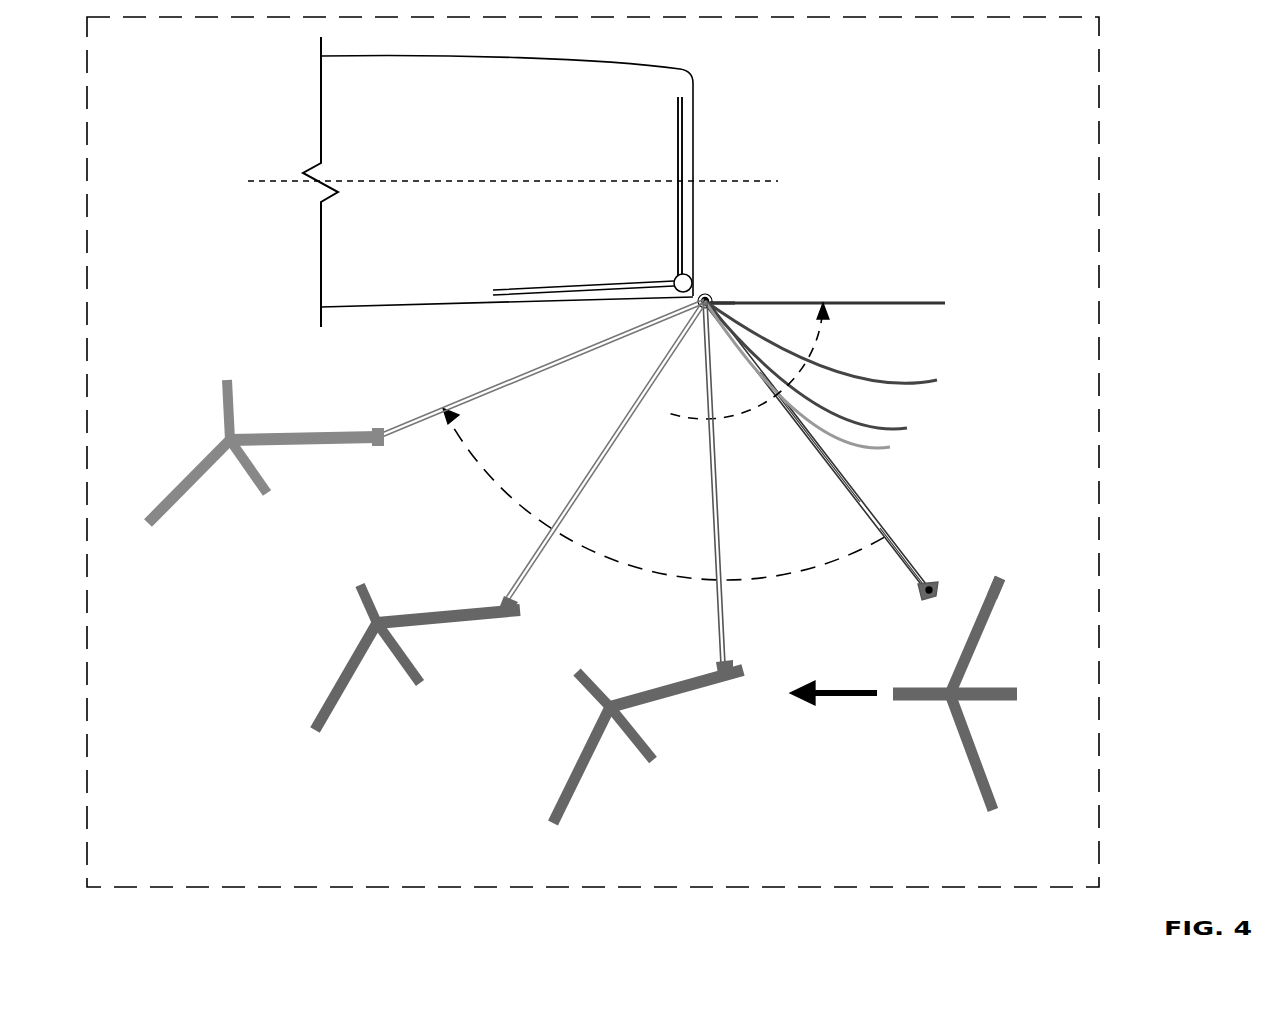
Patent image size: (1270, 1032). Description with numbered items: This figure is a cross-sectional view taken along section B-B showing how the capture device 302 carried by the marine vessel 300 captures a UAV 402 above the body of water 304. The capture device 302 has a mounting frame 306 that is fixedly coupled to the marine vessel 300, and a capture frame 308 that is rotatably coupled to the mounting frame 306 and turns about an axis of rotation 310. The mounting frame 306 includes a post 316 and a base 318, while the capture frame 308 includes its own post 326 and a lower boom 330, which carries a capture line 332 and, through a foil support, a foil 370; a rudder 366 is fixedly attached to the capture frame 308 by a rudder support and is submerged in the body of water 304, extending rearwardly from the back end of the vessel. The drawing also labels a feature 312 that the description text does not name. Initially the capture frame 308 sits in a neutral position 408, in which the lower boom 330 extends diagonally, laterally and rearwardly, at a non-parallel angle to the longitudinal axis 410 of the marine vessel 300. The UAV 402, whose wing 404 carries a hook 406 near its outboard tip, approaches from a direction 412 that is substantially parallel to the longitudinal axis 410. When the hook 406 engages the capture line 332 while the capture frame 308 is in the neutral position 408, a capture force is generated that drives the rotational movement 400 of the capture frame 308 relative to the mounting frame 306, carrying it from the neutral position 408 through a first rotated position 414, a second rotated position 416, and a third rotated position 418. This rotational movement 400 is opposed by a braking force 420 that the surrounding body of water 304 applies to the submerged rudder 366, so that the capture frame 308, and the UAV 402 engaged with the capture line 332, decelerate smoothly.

The marine vessel 300 is at (456, 119).
The capture device 302 is at (842, 422).
The body of water 304 is at (863, 141).
The mounting frame 306 is at (677, 212).
The capture frame 308 is at (870, 500).
The axis of rotation 310 is at (707, 290).
The fuselage lower surface 312 is at (380, 297).
The post 316 is at (677, 276).
The base 318 is at (677, 135).
The post 326 is at (712, 298).
The lower boom 330 is at (907, 550).
The capture line 332 is at (930, 605).
The rudder 366 is at (887, 306).
The foil 370 is at (913, 600).
The rotational movement 400 is at (623, 563).
The UAV 402 is at (973, 667).
The wing 404 is at (983, 637).
The hook 406 is at (993, 583).
The neutral position 408 is at (843, 490).
The longitudinal axis 410 is at (727, 180).
The direction 412 is at (852, 700).
The first rotated position 414 is at (713, 535).
The second rotated position 416 is at (588, 465).
The third rotated position 418 is at (493, 380).
The braking force 420 is at (747, 412).